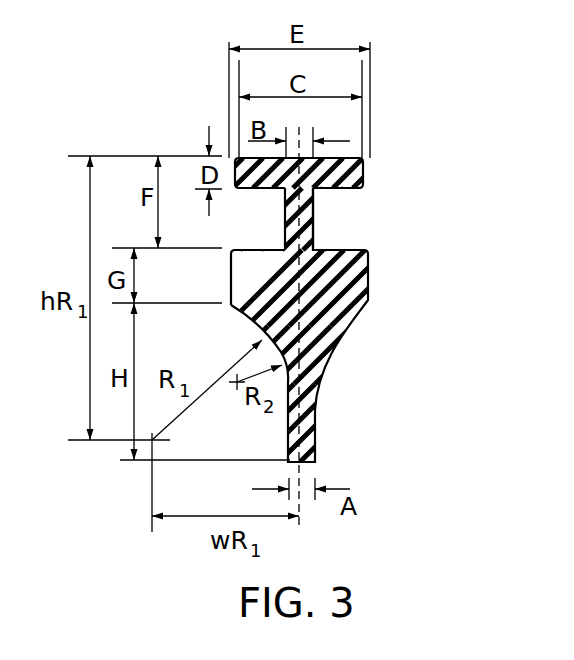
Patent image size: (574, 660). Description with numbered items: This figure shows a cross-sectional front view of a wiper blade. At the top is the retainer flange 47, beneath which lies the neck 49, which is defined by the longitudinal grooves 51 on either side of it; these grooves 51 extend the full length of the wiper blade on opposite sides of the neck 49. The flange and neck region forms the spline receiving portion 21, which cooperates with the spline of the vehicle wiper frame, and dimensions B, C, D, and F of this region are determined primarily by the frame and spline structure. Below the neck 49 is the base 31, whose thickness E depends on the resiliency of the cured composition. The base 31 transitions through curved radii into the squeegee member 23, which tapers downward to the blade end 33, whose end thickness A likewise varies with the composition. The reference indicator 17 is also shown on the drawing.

The fastener (T-shaped anchor) 17 is at (176, 78).
The spline receiving portion 21 is at (358, 207).
The squeegee member 23 is at (238, 310).
The base 31 is at (360, 273).
The blade end 33 is at (293, 461).
The retainer flange 47 is at (360, 172).
The neck 49 is at (310, 205).
The longitudinal grooves 51 is at (247, 214).